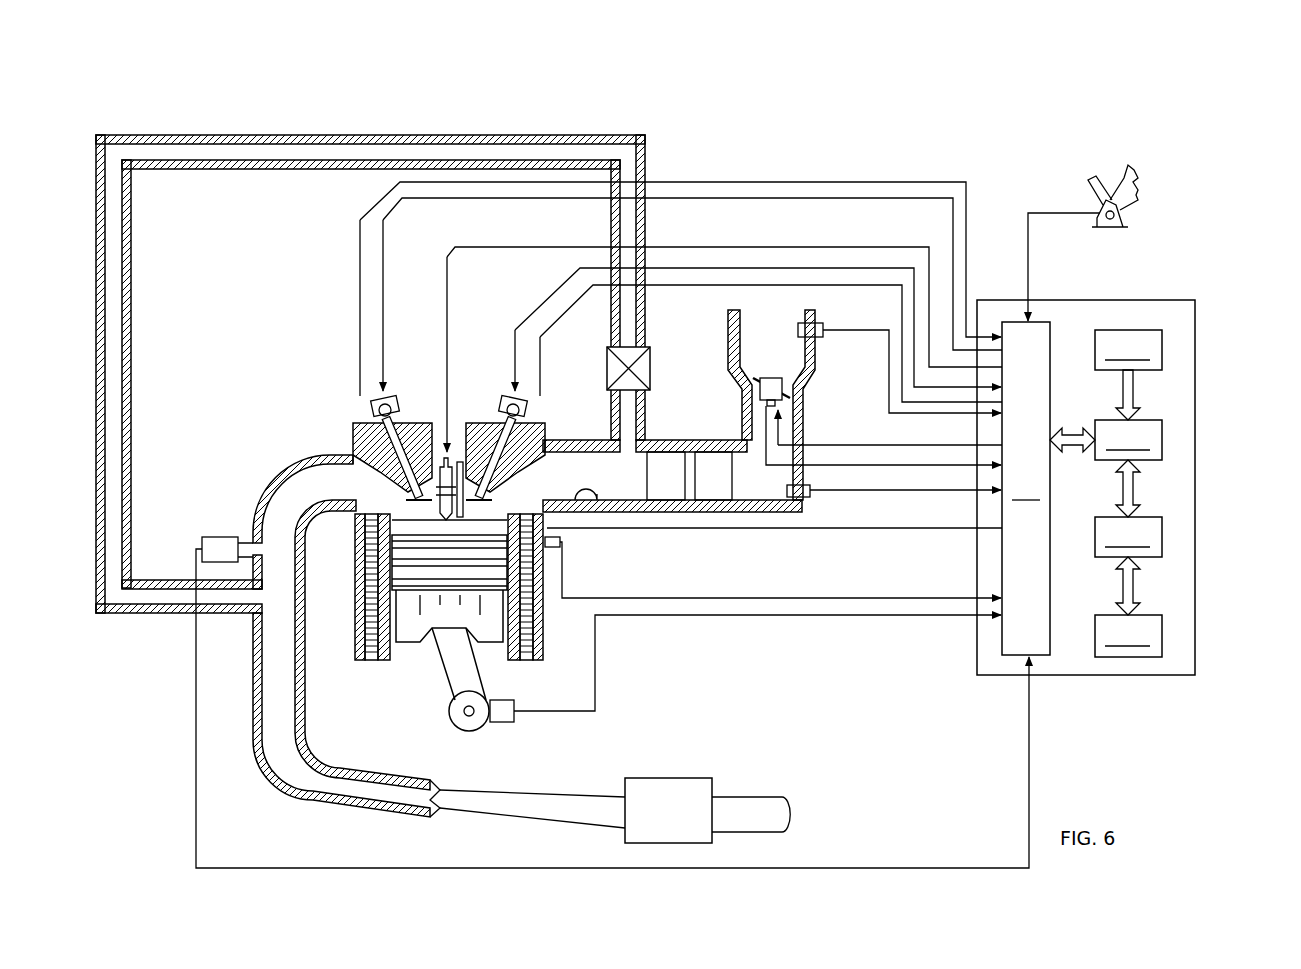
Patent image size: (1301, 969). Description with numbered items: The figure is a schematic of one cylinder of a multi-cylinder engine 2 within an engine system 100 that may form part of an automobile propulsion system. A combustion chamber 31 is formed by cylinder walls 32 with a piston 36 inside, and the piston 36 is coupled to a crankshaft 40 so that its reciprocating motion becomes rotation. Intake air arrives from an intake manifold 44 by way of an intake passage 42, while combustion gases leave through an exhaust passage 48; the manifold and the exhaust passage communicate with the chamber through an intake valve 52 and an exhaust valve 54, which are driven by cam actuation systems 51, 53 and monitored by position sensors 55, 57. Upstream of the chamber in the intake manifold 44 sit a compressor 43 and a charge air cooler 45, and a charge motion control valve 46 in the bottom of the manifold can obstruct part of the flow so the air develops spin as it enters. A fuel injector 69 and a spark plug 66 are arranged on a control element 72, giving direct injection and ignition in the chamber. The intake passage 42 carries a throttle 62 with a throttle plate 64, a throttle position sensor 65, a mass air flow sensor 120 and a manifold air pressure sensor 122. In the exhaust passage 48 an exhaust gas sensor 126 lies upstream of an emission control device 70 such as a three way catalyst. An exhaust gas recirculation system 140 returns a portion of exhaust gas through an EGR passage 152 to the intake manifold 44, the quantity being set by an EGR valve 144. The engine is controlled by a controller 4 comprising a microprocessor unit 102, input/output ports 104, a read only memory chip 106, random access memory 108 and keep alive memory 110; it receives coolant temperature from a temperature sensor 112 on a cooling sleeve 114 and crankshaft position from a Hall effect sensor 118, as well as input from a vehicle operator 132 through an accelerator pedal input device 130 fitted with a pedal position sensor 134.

The engine 2 is at (292, 380).
The controller 4 is at (1128, 476).
The combustion chamber 31 is at (423, 522).
The cylinder walls 32 is at (397, 652).
The piston 36 is at (433, 612).
The crankshaft 40 is at (457, 735).
The intake passage 42 is at (782, 356).
The compressor 43 is at (727, 485).
The intake manifold 44 is at (782, 489).
The charge air cooler 45 is at (680, 485).
The charge motion control valve 46 is at (596, 494).
The exhaust passage 48 is at (333, 496).
The intake cam actuation system 51 is at (505, 395).
The intake valve 52 is at (490, 484).
The exhaust cam actuation system 53 is at (388, 395).
The exhaust valve 54 is at (400, 490).
The intake valve position sensor 55 is at (526, 406).
The exhaust valve position sensor 57 is at (372, 406).
The throttle 62 is at (790, 392).
The throttle plate 64 is at (758, 386).
The throttle position sensor 65 is at (765, 405).
The spark plug 66 is at (432, 455).
The fuel injector 69 is at (461, 460).
The emission control device 70 is at (610, 810).
The control element 72 is at (452, 440).
The engine system 100 is at (1230, 110).
The microprocessor unit 102 is at (1163, 442).
The input/output ports 104 is at (1052, 328).
The read only memory chip 106 is at (1163, 350).
The random access memory 108 is at (1163, 538).
The keep alive memory 110 is at (1163, 637).
The temperature sensor 112 is at (556, 548).
The cooling sleeve 114 is at (537, 615).
The Hall effect sensor 118 is at (503, 723).
The mass air flow sensor 120 is at (822, 324).
The manifold air pressure sensor 122 is at (805, 498).
The exhaust gas sensor 126 is at (203, 538).
The input device 130 is at (1142, 234).
The vehicle operator 132 is at (1135, 178).
The pedal position sensor 134 is at (1117, 215).
The exhaust gas recirculation system 140 is at (370, 449).
The EGR valve 144 is at (647, 372).
The EGR passage 152 is at (365, 136).